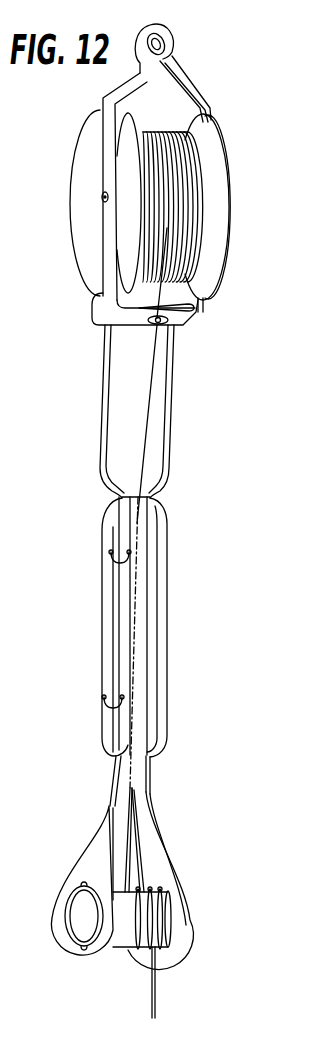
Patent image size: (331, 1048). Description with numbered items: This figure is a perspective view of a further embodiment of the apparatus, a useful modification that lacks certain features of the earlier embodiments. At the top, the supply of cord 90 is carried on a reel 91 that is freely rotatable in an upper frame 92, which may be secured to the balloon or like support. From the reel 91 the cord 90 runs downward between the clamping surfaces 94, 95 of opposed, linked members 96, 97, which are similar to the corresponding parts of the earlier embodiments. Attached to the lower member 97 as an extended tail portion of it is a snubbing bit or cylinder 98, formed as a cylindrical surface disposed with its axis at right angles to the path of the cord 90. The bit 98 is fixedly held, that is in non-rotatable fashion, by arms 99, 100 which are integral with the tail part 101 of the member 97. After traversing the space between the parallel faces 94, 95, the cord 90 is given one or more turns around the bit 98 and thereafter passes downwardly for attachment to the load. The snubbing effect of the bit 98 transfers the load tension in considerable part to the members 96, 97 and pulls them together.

The cord 90 is at (148, 405).
The reel 91 is at (214, 186).
The upper frame 92 is at (103, 255).
The clamping surface 94 is at (112, 650).
The clamping surface 95 is at (118, 665).
The linked member 96 is at (108, 588).
The lower member 97 is at (160, 590).
The snubbing bit 98 is at (167, 920).
The arm 99 is at (78, 875).
The arm 100 is at (160, 862).
The tail part 101 is at (140, 773).